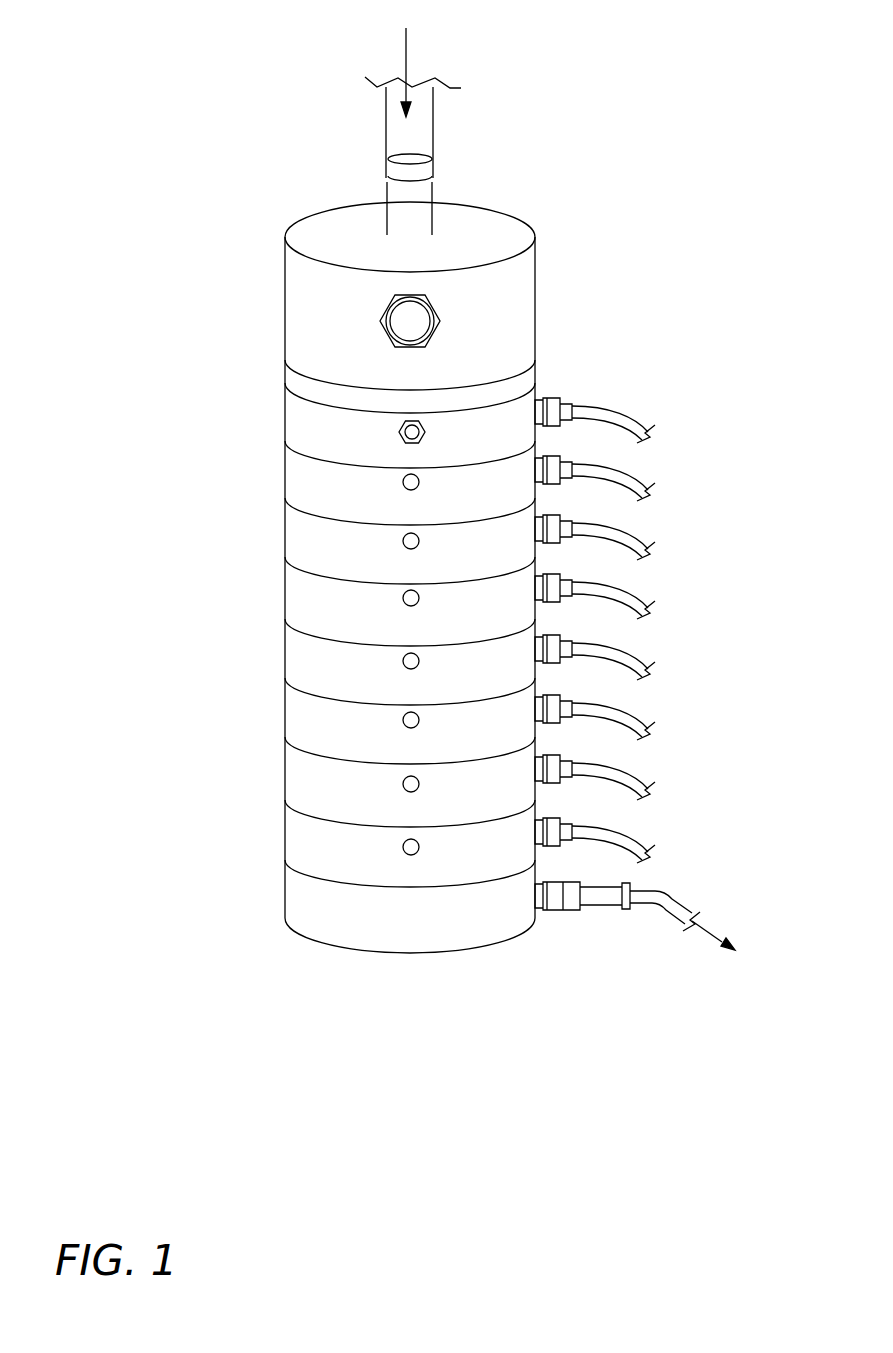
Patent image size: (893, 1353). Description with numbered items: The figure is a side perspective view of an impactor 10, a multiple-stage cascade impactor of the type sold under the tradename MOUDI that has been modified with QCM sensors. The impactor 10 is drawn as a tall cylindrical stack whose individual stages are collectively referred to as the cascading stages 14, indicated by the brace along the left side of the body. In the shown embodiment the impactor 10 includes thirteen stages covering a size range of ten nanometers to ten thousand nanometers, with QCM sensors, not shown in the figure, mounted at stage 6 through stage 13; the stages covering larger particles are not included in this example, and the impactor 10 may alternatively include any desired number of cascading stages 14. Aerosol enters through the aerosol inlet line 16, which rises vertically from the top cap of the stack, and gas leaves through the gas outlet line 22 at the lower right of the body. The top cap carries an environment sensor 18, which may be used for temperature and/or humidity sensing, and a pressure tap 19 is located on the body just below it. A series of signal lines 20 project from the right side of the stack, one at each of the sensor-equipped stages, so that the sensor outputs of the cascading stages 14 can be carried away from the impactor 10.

The impactor 10 is at (546, 150).
The aerosol inlet line 16 is at (387, 193).
The environment sensor 18 is at (435, 303).
The stage 6 is at (292, 398).
The pressure tap 19 is at (385, 432).
The cascading stages 14 is at (300, 583).
The stage 13 is at (356, 811).
The signal lines 20 is at (631, 630).
The gas outlet line 22 is at (675, 931).